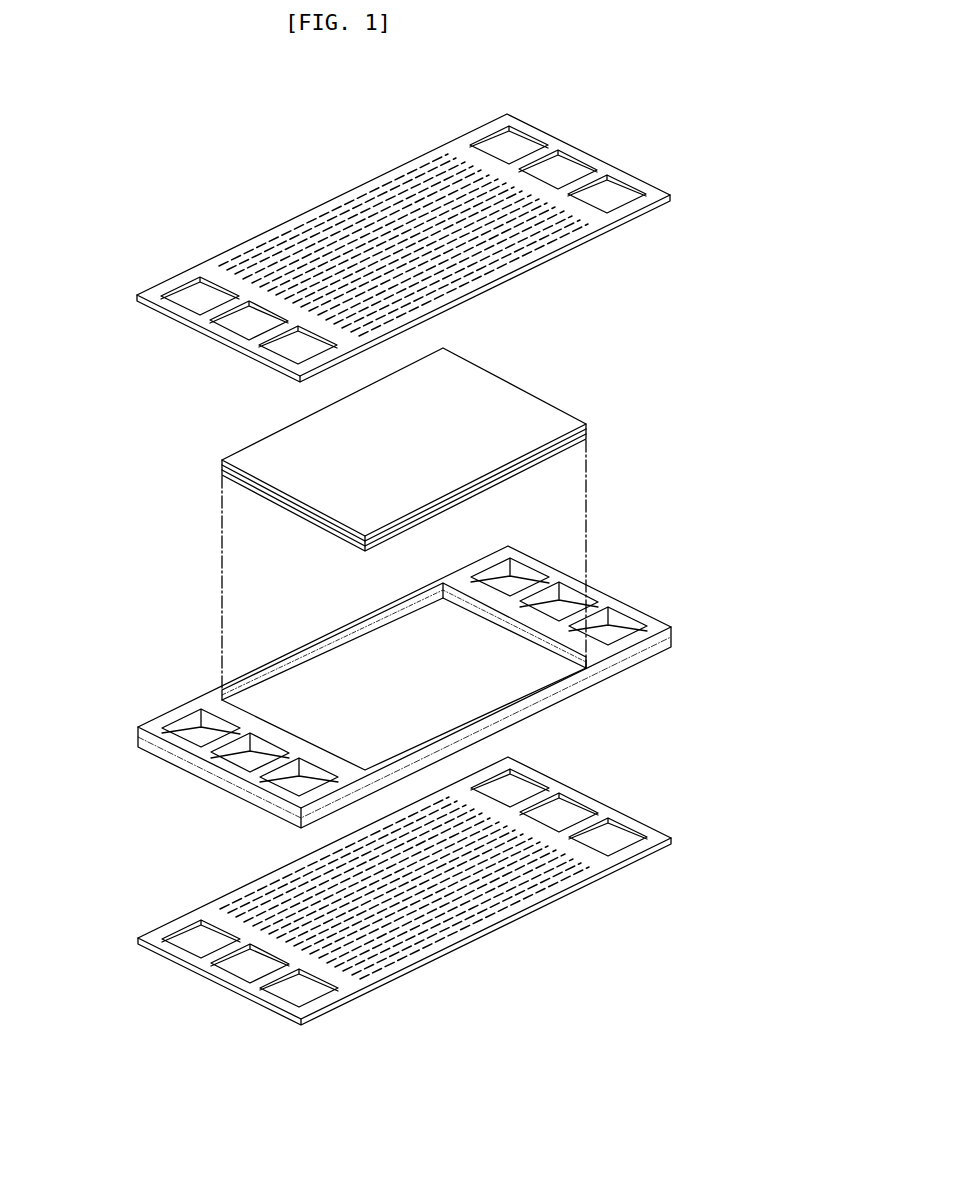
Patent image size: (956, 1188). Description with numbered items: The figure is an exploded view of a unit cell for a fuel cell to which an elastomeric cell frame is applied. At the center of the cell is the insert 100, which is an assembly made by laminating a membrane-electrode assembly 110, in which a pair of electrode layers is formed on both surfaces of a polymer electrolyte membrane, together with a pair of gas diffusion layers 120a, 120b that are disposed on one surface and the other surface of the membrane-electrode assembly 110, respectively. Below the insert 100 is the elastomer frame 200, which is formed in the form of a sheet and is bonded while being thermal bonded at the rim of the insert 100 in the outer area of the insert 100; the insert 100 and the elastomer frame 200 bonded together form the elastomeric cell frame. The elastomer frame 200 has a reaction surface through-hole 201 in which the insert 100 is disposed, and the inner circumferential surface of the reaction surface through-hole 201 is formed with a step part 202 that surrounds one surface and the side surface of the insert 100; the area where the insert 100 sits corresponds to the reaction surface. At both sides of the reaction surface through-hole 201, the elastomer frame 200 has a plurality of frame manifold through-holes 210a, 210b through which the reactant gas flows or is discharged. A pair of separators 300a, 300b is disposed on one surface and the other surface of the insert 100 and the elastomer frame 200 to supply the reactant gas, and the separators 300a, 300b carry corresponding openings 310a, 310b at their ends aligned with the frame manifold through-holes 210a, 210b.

The insert 100 is at (316, 449).
The membrane-electrode assembly 110 is at (222, 468).
The gas diffusion layer 120a is at (222, 474).
The gas diffusion layer 120b is at (222, 462).
The elastomer frame 200 is at (384, 664).
The reaction surface through-hole 201 is at (362, 664).
The step part 202 is at (302, 672).
The frame manifold through-hole 210a is at (251, 761).
The frame manifold through-hole 210b is at (567, 600).
The separator 300a is at (373, 243).
The separator 300b is at (158, 952).
The upper plate coupling holes (left) 310a is at (247, 329).
The upper plate coupling holes (right) 310b is at (615, 196).